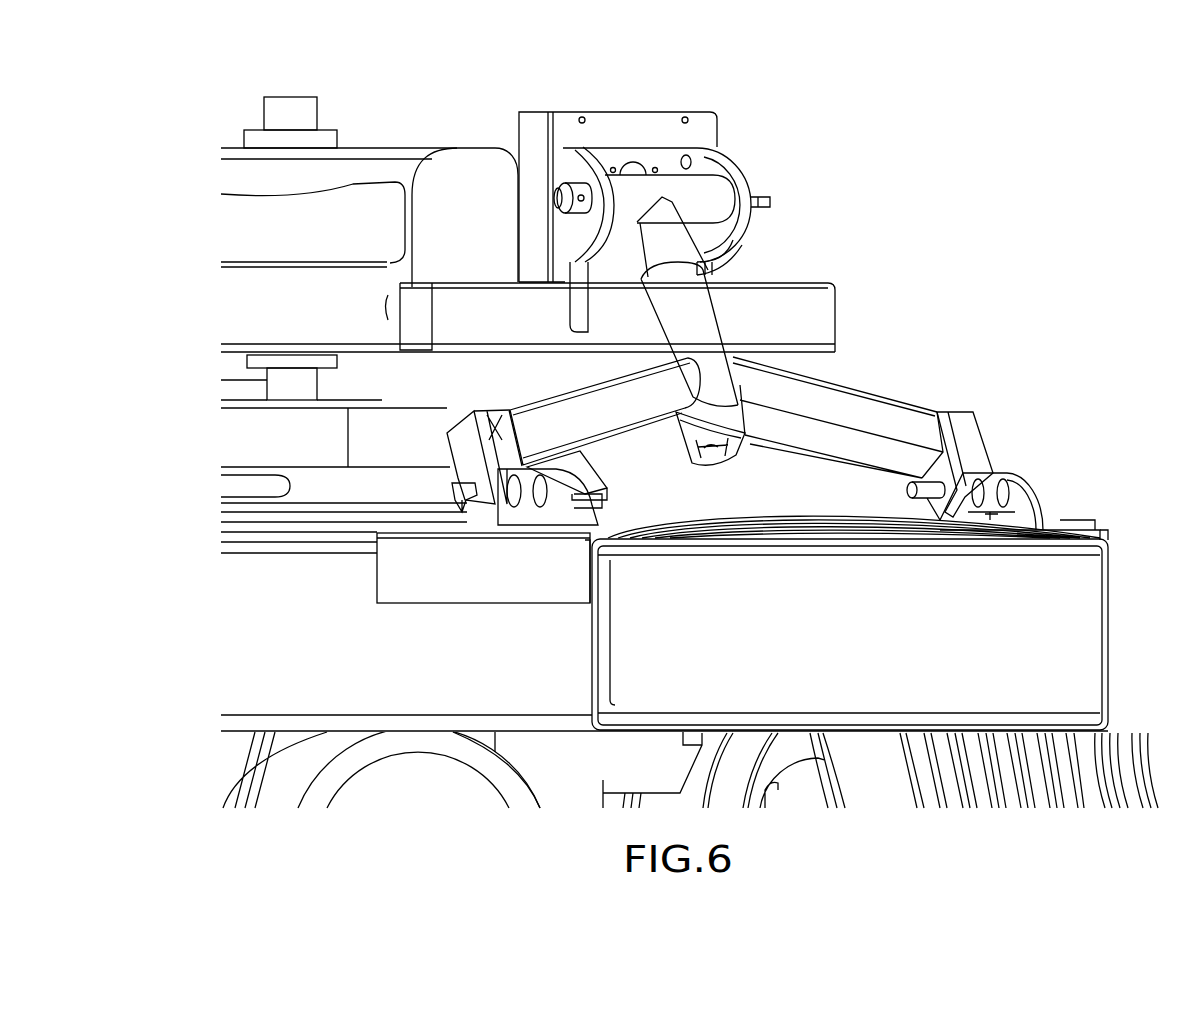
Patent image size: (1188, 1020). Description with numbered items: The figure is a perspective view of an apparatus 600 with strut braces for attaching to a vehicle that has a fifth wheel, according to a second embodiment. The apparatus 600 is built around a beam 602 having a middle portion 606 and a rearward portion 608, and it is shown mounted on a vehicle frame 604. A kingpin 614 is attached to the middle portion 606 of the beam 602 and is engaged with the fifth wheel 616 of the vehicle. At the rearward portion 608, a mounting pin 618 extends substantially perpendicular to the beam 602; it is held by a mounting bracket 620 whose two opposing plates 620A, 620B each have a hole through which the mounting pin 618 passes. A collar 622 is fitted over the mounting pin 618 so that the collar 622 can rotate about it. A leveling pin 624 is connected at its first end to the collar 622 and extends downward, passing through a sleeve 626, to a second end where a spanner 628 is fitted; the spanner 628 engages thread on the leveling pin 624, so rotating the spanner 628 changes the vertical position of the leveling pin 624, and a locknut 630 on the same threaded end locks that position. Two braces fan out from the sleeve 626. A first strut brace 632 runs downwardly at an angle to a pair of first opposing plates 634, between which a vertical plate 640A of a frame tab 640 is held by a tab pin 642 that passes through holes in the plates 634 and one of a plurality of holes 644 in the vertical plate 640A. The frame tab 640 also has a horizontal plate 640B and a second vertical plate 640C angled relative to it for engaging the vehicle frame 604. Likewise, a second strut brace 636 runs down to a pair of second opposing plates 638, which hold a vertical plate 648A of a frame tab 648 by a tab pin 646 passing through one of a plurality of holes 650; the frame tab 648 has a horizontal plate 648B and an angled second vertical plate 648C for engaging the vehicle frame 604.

The apparatus 600 is at (695, 400).
The beam 602 is at (240, 148).
The vehicle frame 604 is at (235, 613).
The middle portion 606 is at (345, 86).
The rearward portion 608 is at (603, 94).
The kingpin 614 is at (320, 387).
The fifth wheel 616 is at (438, 411).
The mounting pin 618 is at (557, 196).
The mounting bracket 620 is at (678, 201).
The opposing plate 620A is at (583, 135).
The opposing plate 620B is at (730, 156).
The collar 622 is at (722, 188).
The leveling pin 624 is at (714, 237).
The sleeve 626 is at (733, 323).
The spanner 628 is at (684, 430).
The locknut 630 is at (742, 455).
The first strut brace 632 is at (606, 452).
The pair of first opposing plates 634 is at (428, 433).
The second strut brace 636 is at (888, 396).
The pair of second opposing plates 638 is at (990, 398).
The frame tab 640 is at (742, 623).
The vertical plate 640A is at (546, 525).
The horizontal plate 640B is at (627, 543).
The second vertical plate 640C is at (558, 593).
The tab pin 642 is at (467, 505).
The plurality of holes 644 is at (538, 507).
The tab pin 646 is at (905, 488).
The frame tab 648 is at (1054, 470).
The vertical plate 648A is at (1028, 473).
The horizontal plate 648B is at (1083, 530).
The second vertical plate 648C is at (1108, 538).
The plurality of holes 650 is at (995, 514).